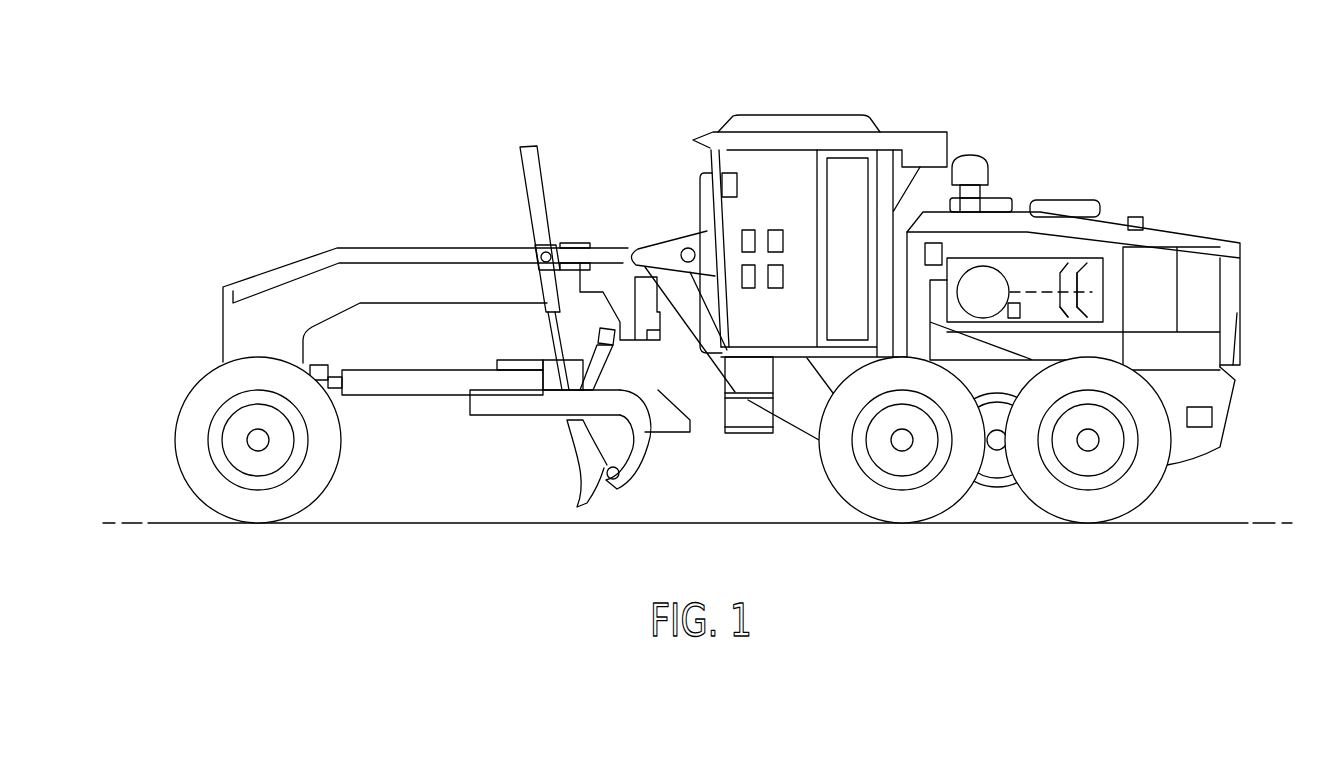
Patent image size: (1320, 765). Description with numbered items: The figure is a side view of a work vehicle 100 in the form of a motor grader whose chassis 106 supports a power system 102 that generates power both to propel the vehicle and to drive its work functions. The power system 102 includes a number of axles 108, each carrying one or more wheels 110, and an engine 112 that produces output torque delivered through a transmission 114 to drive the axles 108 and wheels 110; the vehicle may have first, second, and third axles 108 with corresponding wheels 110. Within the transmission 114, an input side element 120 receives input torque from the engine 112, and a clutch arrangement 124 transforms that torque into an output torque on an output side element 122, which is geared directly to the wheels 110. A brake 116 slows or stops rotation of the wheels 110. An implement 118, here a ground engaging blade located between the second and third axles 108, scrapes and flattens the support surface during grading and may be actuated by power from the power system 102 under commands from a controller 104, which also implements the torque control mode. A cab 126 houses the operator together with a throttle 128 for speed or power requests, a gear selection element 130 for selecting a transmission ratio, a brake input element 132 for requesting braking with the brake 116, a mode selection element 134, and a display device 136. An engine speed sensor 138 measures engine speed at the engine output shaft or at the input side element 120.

The work vehicle 100 is at (238, 92).
The power system 102 is at (960, 110).
The controller 104 is at (932, 243).
The chassis 106 is at (997, 457).
The axles 108 is at (257, 437).
The wheels 110 is at (323, 460).
The prime mover (engine) 112 is at (957, 290).
The transmission 114 is at (1075, 318).
The brake 116 is at (1200, 427).
The implement 118 is at (595, 485).
The input side element 120 is at (1053, 266).
The output side element 122 is at (1085, 277).
The clutch arrangement 124 is at (1093, 258).
The cab 126 is at (830, 113).
The throttle 128 is at (742, 240).
The gear selection element 130 is at (740, 283).
The brake input element 132 is at (770, 290).
The mode selection element 134 is at (775, 228).
The display device 136 is at (728, 173).
The engine speed sensor 138 is at (1017, 303).